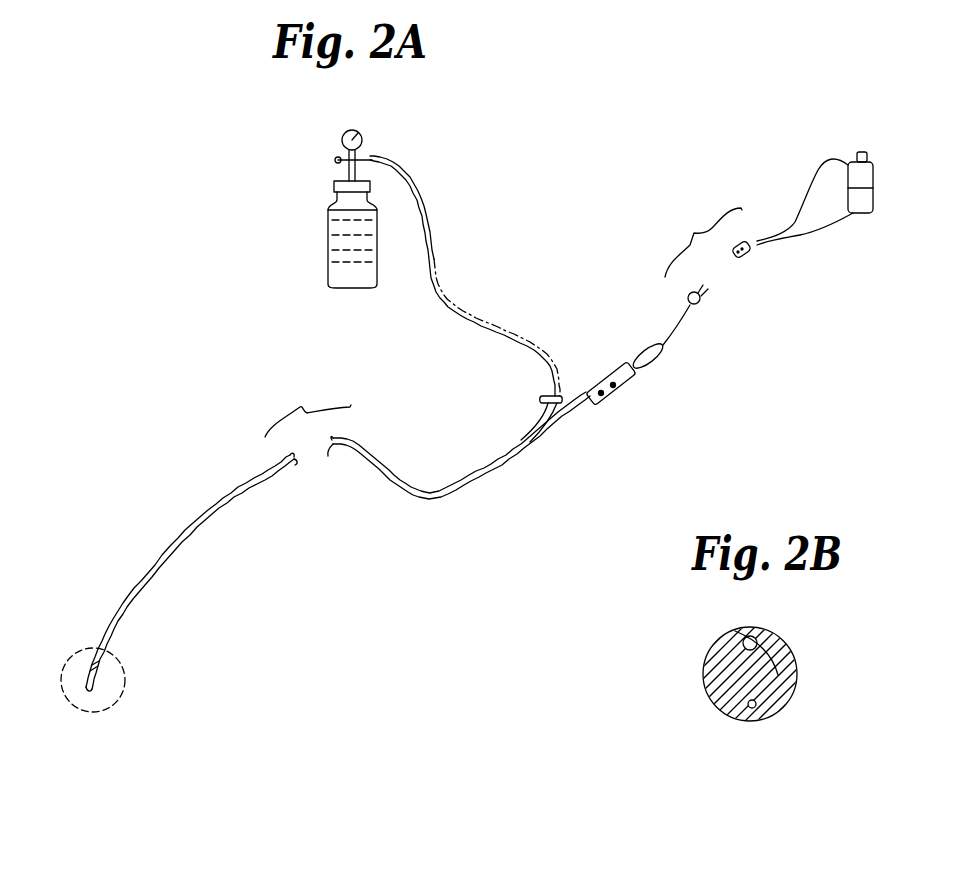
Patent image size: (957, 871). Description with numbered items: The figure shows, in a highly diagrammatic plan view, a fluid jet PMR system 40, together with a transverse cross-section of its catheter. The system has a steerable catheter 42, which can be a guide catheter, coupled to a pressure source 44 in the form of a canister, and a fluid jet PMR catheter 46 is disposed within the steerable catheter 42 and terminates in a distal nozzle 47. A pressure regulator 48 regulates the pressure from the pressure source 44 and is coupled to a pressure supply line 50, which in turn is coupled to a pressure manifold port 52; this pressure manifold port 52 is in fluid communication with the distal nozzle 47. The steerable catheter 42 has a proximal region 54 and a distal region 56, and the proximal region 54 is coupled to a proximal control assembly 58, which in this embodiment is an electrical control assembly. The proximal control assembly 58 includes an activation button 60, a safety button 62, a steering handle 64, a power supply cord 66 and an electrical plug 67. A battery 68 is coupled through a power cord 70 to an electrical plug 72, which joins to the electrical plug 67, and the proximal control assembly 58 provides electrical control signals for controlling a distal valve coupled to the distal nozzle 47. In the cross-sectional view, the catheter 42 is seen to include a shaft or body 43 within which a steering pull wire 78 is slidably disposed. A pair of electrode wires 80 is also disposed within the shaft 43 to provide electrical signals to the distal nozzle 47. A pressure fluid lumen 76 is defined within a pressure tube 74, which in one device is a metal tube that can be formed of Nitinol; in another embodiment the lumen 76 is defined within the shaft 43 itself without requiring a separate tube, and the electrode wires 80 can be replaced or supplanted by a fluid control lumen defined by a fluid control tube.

In FIG. 2A, the fluid jet PMR system 40 is at (473, 171).
In FIG. 2A, the steerable catheter 42 is at (127, 611).
In FIG. 2B, the steerable catheter 42 is at (788, 633).
In FIG. 2B, the shaft 43 is at (771, 690).
In FIG. 2A, the pressure source 44 is at (330, 242).
In FIG. 2A, the fluid jet PMR catheter 46 is at (90, 668).
In FIG. 2A, the distal nozzle 47 is at (110, 703).
In FIG. 2A, the pressure regulator 48 is at (359, 132).
In FIG. 2A, the pressure supply line 50 is at (434, 246).
In FIG. 2A, the pressure manifold port 52 is at (541, 399).
In FIG. 2A, the proximal region 54 is at (511, 470).
In FIG. 2A, the distal region 56 is at (113, 642).
In FIG. 2A, the proximal control assembly 58 is at (707, 361).
In FIG. 2A, the activation button 60 is at (604, 396).
In FIG. 2A, the safety button 62 is at (616, 387).
In FIG. 2A, the steering handle 64 is at (660, 358).
In FIG. 2A, the power supply cord 66 is at (686, 320).
In FIG. 2A, the electrical plug 67 is at (707, 294).
In FIG. 2A, the battery 68 is at (873, 166).
In FIG. 2A, the power cord 70 is at (800, 237).
In FIG. 2A, the electrical plug 72 is at (741, 258).
In FIG. 2B, the pressure tube 74 is at (783, 675).
In FIG. 2B, the pressure fluid lumen 76 is at (743, 636).
In FIG. 2B, the steering pull wire 78 is at (752, 706).
In FIG. 2B, the electrode wires 80 is at (716, 687).